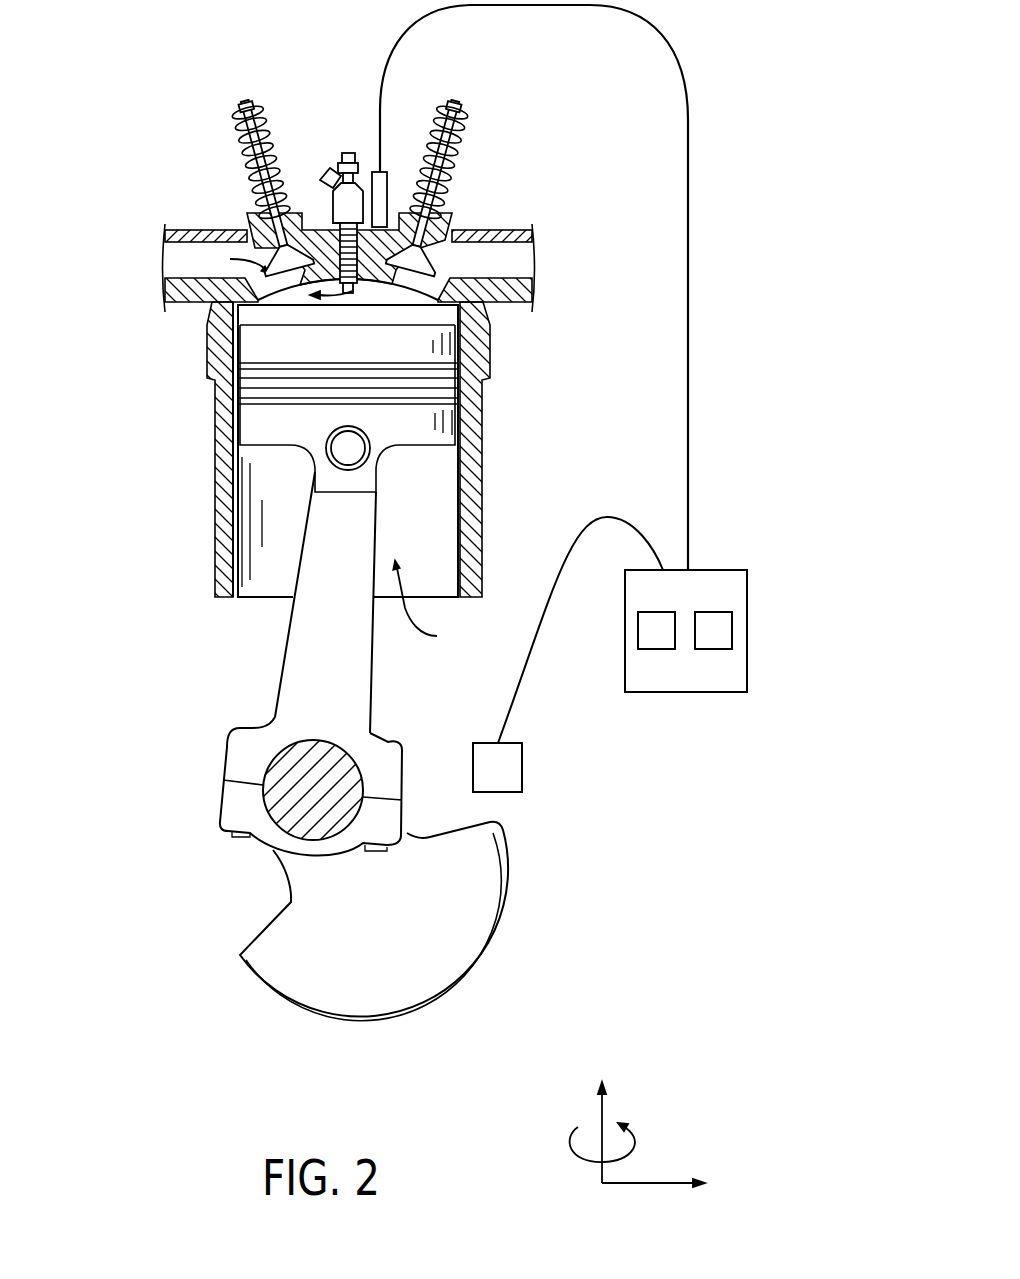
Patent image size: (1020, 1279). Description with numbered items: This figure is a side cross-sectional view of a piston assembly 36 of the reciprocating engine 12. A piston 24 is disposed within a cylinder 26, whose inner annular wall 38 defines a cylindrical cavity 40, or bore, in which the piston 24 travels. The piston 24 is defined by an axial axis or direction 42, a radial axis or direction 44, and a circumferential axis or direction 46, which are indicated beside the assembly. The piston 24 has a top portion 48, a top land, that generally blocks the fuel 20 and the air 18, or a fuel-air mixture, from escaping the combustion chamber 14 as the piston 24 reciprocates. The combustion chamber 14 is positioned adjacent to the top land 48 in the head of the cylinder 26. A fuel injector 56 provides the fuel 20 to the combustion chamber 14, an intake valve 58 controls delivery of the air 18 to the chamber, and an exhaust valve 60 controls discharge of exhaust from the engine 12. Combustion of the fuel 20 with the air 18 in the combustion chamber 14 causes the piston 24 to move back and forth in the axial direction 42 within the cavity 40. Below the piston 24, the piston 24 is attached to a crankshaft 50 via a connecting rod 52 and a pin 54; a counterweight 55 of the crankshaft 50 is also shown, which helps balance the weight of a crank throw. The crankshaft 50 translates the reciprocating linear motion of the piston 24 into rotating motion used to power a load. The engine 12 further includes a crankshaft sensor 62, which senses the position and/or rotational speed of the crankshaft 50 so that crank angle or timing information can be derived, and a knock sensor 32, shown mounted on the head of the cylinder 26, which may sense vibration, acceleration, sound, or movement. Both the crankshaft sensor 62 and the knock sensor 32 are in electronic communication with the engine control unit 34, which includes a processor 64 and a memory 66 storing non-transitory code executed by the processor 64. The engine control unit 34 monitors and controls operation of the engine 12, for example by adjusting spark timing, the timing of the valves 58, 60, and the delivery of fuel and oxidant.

The reciprocating engine 12 is at (582, 125).
The combustion chamber 14 is at (390, 292).
The air 18 is at (255, 265).
The fuel 20 is at (350, 148).
The piston 24 is at (427, 436).
The cylinder 26 is at (213, 480).
The knock sensor 32 is at (388, 178).
The engine control unit 34 is at (705, 643).
The piston assembly 36 is at (430, 606).
The inner annular wall 38 is at (232, 520).
The cylindrical cavity 40 is at (286, 591).
The axial axis 42 is at (600, 1117).
The radial axis 44 is at (647, 1185).
The circumferential axis 46 is at (633, 1153).
The top portion 48 is at (410, 353).
The crankshaft 50 is at (283, 790).
The connecting rod 52 is at (352, 706).
The pin 54 is at (356, 458).
The counterweight 55 is at (397, 933).
The fuel injector 56 is at (360, 168).
The intake valve 58 is at (252, 115).
The exhaust valve 60 is at (453, 113).
The crankshaft sensor 62 is at (522, 768).
The processor 64 is at (657, 649).
The memory 66 is at (713, 649).